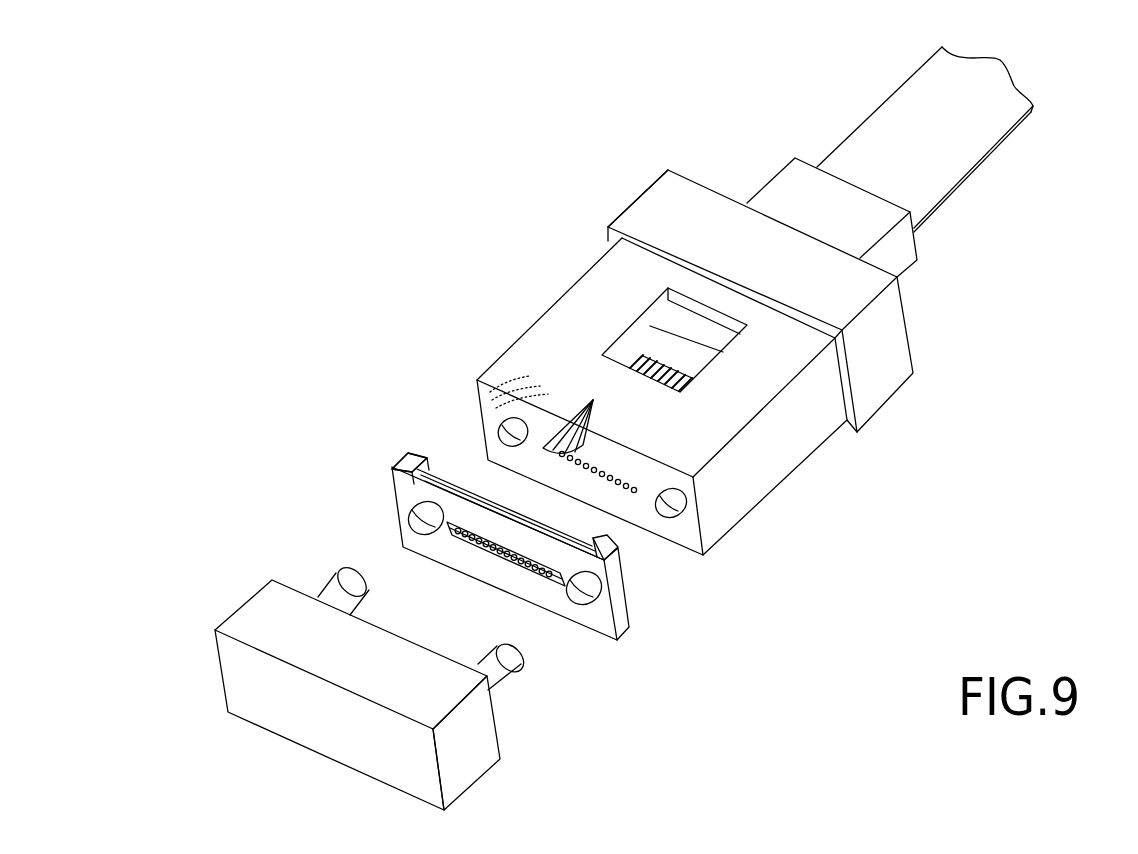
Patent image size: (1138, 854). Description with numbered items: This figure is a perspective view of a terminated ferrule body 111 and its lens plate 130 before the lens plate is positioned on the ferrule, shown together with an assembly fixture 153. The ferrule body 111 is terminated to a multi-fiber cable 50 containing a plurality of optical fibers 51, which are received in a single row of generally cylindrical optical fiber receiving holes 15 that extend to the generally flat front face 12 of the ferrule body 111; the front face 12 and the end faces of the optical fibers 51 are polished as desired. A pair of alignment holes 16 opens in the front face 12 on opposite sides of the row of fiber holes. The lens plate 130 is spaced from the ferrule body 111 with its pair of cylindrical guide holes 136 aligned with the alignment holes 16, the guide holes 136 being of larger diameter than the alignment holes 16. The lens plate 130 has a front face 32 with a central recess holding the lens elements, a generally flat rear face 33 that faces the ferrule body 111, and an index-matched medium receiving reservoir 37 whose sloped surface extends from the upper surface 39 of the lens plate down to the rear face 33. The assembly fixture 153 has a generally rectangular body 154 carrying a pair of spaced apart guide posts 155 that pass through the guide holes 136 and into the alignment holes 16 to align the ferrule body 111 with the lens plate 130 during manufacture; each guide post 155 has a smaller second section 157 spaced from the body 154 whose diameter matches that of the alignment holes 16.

The front face 12 is at (500, 392).
The optical fiber receiving holes 15 is at (593, 403).
The alignment holes 16 is at (521, 420).
The front face 32 is at (483, 558).
The rear face 33 is at (418, 453).
The index-matched medium receiving reservoir 37 is at (470, 488).
The upper surface 39 is at (408, 453).
The multi-fiber cable 50 is at (990, 122).
The optical fibers 51 is at (648, 352).
The ferrule body 111 is at (815, 428).
The lens plate 130 is at (627, 607).
The guide holes 136 is at (412, 500).
The assembly fixture 153 is at (327, 737).
The body 154 is at (437, 778).
The guide posts 155 is at (338, 586).
The second section 157 is at (356, 572).